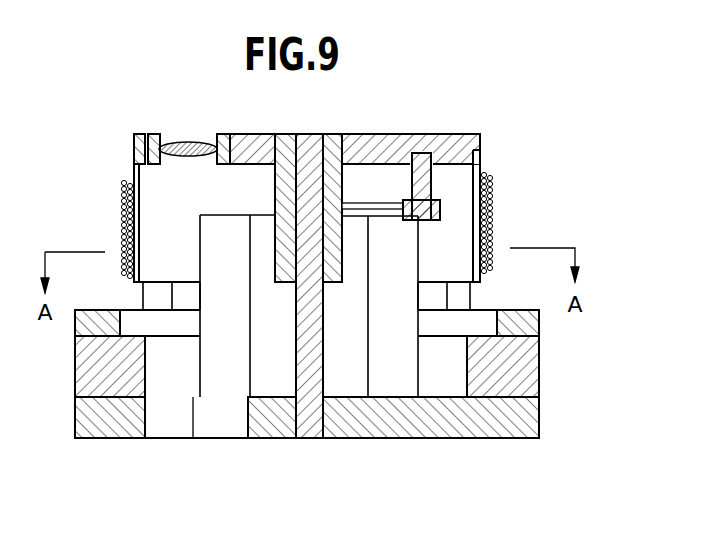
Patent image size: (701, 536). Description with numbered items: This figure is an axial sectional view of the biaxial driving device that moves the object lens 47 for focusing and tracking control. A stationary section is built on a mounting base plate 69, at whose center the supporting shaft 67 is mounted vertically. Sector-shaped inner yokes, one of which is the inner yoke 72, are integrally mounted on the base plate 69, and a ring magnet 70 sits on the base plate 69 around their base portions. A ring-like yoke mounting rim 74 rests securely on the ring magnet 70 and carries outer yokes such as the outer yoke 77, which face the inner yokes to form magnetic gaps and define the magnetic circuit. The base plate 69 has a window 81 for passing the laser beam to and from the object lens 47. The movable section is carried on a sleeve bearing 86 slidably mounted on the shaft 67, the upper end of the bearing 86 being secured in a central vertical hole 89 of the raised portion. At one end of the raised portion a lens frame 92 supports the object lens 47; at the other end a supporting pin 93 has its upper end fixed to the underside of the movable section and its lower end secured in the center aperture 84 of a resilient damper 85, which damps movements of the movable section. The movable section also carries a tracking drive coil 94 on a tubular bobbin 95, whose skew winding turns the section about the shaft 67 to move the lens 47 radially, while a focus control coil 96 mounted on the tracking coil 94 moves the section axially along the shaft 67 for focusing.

The object lens 47 is at (193, 145).
The supporting shaft 67 is at (296, 357).
The mounting base plate 69 is at (532, 422).
The ring magnet 70 is at (532, 378).
The inner yoke 72 is at (228, 392).
The yoke mounting rim 74 is at (532, 325).
The outer yoke 77 is at (467, 296).
The window 81 is at (146, 423).
The center aperture 84 is at (424, 214).
The damper 85 is at (386, 209).
The sleeve bearing 86 is at (290, 137).
The central vertical hole 89 is at (337, 136).
The lens frame 92 is at (152, 135).
The supporting pin 93 is at (423, 162).
The tracking drive coil 94 is at (121, 190).
The tubular bobbin 95 is at (133, 165).
The focus control coil 96 is at (121, 223).